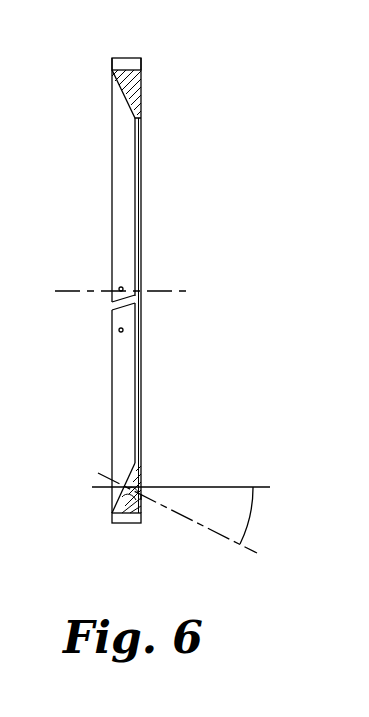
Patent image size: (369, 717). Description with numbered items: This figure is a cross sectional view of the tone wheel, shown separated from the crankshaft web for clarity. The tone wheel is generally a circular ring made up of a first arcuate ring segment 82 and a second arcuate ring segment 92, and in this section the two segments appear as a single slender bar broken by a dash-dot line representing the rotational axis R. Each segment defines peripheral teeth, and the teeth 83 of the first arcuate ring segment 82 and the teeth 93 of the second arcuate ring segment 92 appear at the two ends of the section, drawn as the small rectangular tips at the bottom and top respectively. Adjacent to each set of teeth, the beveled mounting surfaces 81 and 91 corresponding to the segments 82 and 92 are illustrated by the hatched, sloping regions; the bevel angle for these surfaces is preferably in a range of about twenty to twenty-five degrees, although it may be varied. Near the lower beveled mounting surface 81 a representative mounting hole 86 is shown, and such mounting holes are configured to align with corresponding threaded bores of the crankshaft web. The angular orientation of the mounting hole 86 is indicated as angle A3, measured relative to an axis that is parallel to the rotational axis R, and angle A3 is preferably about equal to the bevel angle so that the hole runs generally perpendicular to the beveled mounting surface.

The beveled mounting surface 91 is at (120, 145).
The second arcuate ring segment 92 is at (112, 203).
The peripheral teeth 93 is at (123, 56).
The first arcuate ring segment 82 is at (112, 403).
The beveled mounting surface 81 is at (122, 453).
The peripheral teeth 83 is at (115, 524).
The mounting hole 86 is at (144, 499).
The rotational axis R is at (167, 290).
The angle A3 is at (250, 524).